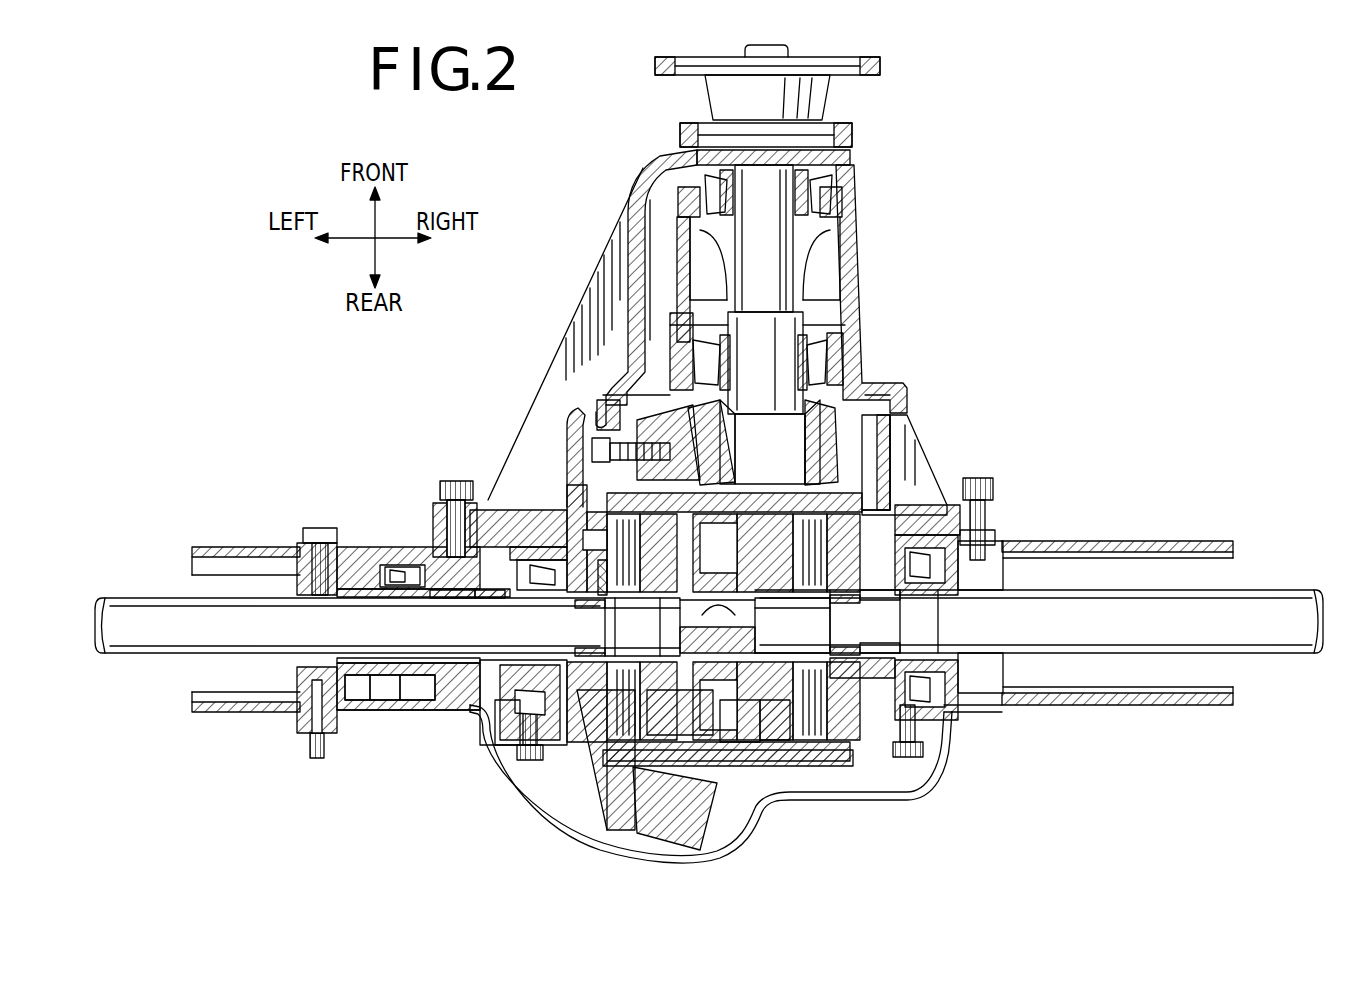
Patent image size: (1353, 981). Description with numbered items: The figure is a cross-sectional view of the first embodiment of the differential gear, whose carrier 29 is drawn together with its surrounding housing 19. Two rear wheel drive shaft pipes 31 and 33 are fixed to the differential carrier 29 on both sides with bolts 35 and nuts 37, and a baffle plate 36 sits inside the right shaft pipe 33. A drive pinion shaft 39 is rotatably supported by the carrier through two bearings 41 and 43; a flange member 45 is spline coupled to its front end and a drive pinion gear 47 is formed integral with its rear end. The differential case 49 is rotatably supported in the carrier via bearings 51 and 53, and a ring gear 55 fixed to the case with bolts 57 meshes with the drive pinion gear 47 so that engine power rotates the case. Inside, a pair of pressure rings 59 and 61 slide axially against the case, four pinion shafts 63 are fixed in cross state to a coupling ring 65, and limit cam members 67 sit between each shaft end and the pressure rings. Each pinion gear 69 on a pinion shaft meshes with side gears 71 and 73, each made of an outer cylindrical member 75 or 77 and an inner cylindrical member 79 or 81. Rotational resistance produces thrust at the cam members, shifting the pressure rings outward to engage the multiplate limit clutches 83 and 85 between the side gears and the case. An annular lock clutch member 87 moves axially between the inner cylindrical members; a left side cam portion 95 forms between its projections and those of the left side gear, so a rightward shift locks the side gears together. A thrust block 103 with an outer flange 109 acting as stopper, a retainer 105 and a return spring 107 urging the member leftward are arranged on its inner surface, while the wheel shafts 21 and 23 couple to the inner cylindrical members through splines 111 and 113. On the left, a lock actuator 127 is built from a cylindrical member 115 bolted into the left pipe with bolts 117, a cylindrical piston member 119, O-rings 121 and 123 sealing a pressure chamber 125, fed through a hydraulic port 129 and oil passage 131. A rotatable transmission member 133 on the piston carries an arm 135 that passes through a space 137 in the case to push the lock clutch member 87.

The differential carrier housing 19 is at (530, 437).
The left rear wheel shaft 21 is at (140, 603).
The right rear wheel shaft 23 is at (1295, 590).
The differential carrier 29 is at (905, 392).
The left rear wheel drive shaft pipe 31 is at (228, 548).
The right rear wheel drive shaft pipe 33 is at (1140, 542).
The bolt 35 is at (415, 562).
The baffle plate 36 is at (1008, 580).
The nut 37 is at (440, 490).
The drive pinion shaft 39 is at (772, 290).
The bearing 41 is at (858, 205).
The bearing 43 is at (840, 350).
The flange member 45 is at (858, 60).
The drive pinion gear 47 is at (812, 450).
The differential case 49 is at (830, 497).
The bearing 51 is at (518, 608).
The bearing 53 is at (885, 520).
The ring gear 55 is at (662, 405).
The bolt 57 is at (592, 447).
The pressure ring 59 is at (745, 766).
The pressure ring 61 is at (785, 766).
The pinion shaft 63 is at (649, 611).
The coupling ring 65 is at (770, 695).
The limit cam member 67 is at (770, 444).
The pinion gear 69 is at (798, 611).
The left side gear 71 is at (600, 592).
The right side gear 73 is at (878, 600).
The outer cylindrical member 75 is at (650, 595).
The outer cylindrical member 77 is at (792, 617).
The inner cylindrical member 79 is at (642, 622).
The inner cylindrical member 81 is at (800, 595).
The multiplate limit clutch 83 is at (593, 561).
The multiplate limit clutch 85 is at (900, 592).
The lock clutch member 87 is at (715, 830).
The left side cam portion 95 is at (660, 695).
The thrust block 103 is at (656, 627).
The retainer 105 is at (732, 592).
The return spring 107 is at (745, 650).
The outer flange 109 is at (623, 627).
The spline 111 is at (592, 625).
The spline 113 is at (866, 650).
The cylindrical member 115 is at (355, 548).
The bolt 117 is at (310, 528).
The cylindrical piston member 119 is at (432, 598).
The O-ring 121 is at (352, 670).
The O-ring 123 is at (425, 675).
The pressure chamber 125 is at (388, 675).
The lock actuator 127 is at (362, 520).
The hydraulic port 129 is at (305, 740).
The oil passage 131 is at (355, 712).
The cylindrical transmission member 133 is at (490, 598).
The arm 135 is at (588, 745).
The space 137 is at (600, 768).